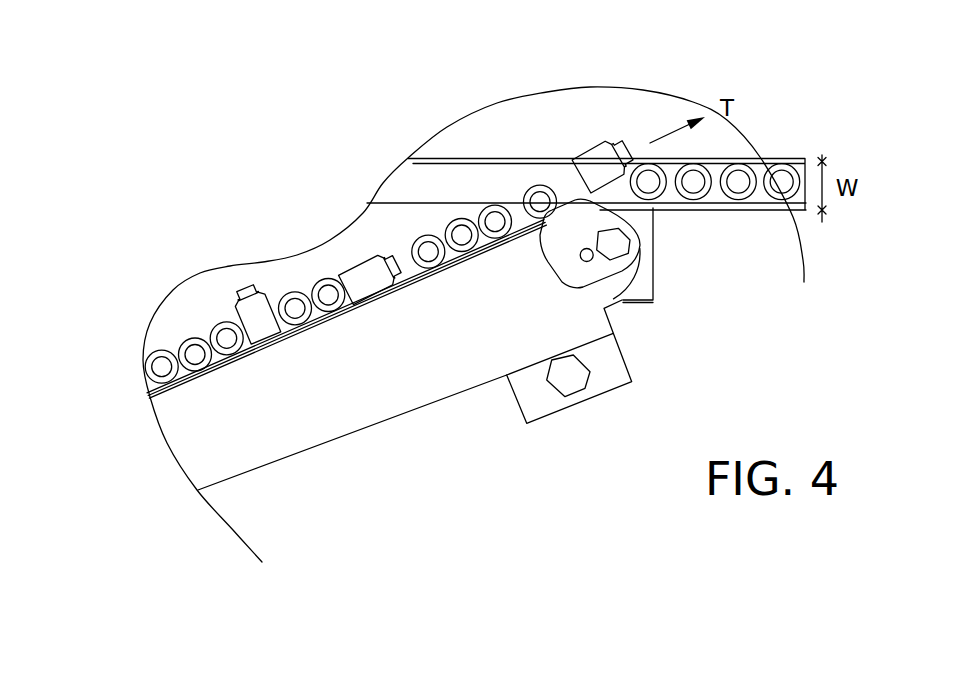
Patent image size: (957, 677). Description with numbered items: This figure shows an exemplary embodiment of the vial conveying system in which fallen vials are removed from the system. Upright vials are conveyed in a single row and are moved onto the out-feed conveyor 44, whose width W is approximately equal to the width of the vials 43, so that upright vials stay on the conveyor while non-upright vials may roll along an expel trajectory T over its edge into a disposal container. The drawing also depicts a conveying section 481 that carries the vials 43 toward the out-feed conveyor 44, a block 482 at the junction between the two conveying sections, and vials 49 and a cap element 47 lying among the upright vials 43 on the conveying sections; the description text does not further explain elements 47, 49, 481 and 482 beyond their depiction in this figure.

The vials 43 is at (744, 222).
The out-feed conveyor 44 is at (512, 173).
The nozzle cap 47 is at (240, 279).
The cartridge 49 is at (264, 321).
The first conveyor section 481 is at (128, 409).
The pivot block 482 is at (606, 295).